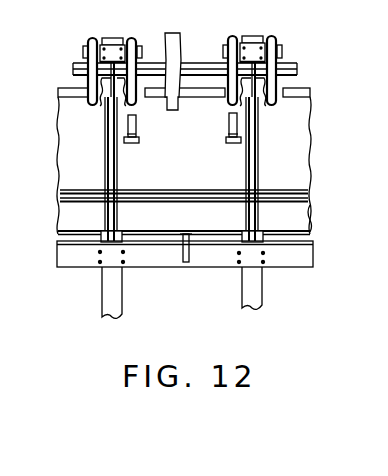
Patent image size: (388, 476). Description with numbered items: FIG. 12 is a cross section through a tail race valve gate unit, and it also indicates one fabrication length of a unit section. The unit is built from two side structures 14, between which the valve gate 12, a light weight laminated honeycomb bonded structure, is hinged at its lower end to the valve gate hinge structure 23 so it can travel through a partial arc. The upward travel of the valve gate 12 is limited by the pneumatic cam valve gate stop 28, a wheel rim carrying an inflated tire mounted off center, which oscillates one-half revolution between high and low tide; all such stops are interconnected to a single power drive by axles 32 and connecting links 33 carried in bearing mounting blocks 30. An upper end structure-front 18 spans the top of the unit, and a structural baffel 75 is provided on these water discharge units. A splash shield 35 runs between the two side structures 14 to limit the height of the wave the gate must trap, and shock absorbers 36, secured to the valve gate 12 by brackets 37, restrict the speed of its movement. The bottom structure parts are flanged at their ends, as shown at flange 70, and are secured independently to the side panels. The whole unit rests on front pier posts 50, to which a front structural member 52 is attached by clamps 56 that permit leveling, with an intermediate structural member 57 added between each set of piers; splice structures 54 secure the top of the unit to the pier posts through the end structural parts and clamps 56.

The valve gate 12 is at (66, 153).
The side structure 14 is at (105, 177).
The upper end structure-front 18 is at (184, 66).
The valve gate hinge structure 23 is at (152, 203).
The pneumatic cam valve gate stop 28 is at (92, 40).
The bearing mounting block 30 is at (258, 104).
The axle 32 is at (133, 104).
The connecting link 33 is at (190, 99).
The splash shield 35 is at (169, 33).
The shock absorber 36 is at (138, 131).
The bracket 37 is at (139, 145).
The front pier post 50 is at (102, 300).
The structural member front 52 is at (140, 268).
The splice structure 54 is at (250, 38).
The clamp 56 is at (92, 268).
The structural member 57 is at (193, 262).
The flange 70 is at (100, 238).
The structural baffel 75 is at (305, 219).